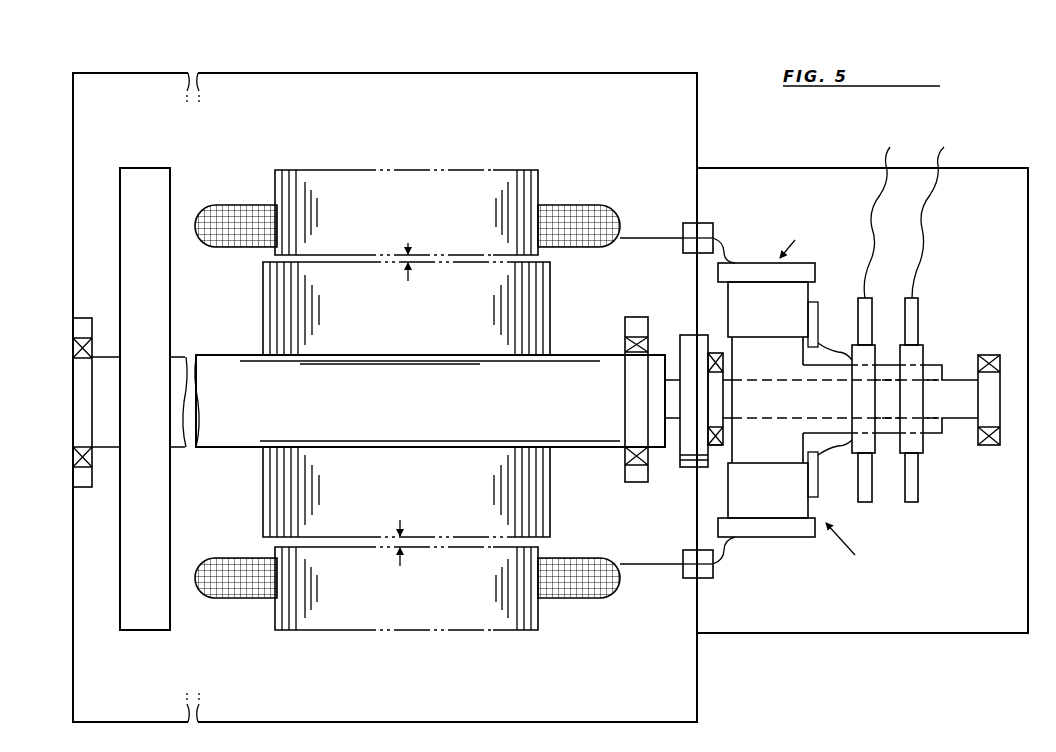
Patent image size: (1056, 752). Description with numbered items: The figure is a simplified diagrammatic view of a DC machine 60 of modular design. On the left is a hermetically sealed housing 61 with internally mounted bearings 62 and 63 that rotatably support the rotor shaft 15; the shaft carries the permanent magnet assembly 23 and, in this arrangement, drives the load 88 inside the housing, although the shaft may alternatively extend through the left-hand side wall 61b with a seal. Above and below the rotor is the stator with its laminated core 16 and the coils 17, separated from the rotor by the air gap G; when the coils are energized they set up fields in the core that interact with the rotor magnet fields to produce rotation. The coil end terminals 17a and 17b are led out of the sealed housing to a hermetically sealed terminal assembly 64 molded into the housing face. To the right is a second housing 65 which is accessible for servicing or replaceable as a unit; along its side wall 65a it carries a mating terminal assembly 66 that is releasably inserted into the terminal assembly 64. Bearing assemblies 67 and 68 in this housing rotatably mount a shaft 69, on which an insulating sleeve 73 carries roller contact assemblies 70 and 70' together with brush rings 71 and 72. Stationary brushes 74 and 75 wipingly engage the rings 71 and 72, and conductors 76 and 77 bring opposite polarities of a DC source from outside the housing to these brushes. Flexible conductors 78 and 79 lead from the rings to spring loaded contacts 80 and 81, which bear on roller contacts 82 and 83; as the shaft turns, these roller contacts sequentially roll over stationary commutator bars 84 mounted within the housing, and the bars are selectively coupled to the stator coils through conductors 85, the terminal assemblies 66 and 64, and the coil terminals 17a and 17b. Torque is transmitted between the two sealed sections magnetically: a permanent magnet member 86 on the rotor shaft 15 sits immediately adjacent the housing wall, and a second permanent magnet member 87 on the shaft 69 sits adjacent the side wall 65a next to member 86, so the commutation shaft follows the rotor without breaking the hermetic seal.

The rotor shaft 15 is at (416, 409).
The laminated core 16 is at (404, 170).
The coils 17 is at (244, 205).
The end terminal 17a is at (647, 232).
The end terminal 17b is at (645, 570).
The permanent magnet assembly 23 is at (262, 310).
The DC machine 60 is at (804, 686).
The hermetically sealed housing 61 is at (522, 72).
The left-hand side wall 61b is at (73, 237).
The bearing 62 is at (84, 487).
The bearing 63 is at (637, 483).
The terminal assembly 64 is at (683, 246).
The second housing 65 is at (830, 165).
The side wall 65a is at (700, 193).
The mating terminal assembly 66 is at (707, 579).
The bearing assembly 67 is at (716, 447).
The bearing assembly 68 is at (985, 447).
The shaft 69 is at (962, 380).
The roller contact assembly 70 is at (795, 238).
The roller contact assembly 70' is at (856, 547).
The brush ring 71 is at (832, 447).
The brush ring 72 is at (925, 455).
The insulating sleeve 73 is at (781, 375).
The brush 74 is at (873, 332).
The brush 75 is at (920, 326).
The conductor 76 is at (873, 227).
The conductor 77 is at (940, 235).
The flexible conductor 78 is at (848, 352).
The flexible conductor 79 is at (882, 455).
The spring loaded contact 80 is at (818, 312).
The spring loaded contact 81 is at (818, 488).
The roller contact 82 is at (781, 321).
The roller contact 83 is at (779, 501).
The commutator bars 84 is at (752, 263).
The conductors 85 is at (722, 537).
The permanent magnet member 86 is at (686, 335).
The second permanent magnet member 87 is at (714, 353).
The load 88 is at (154, 284).
The air gap G is at (403, 407).